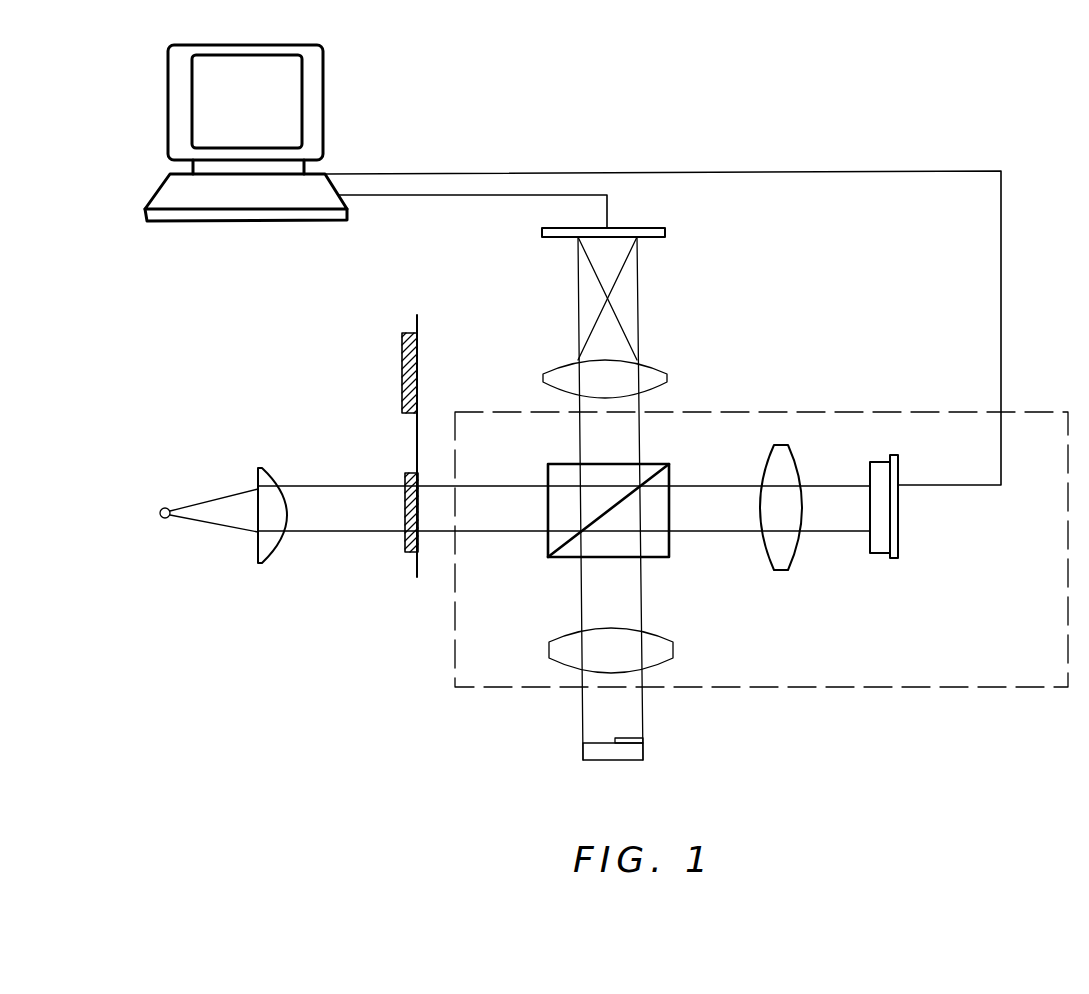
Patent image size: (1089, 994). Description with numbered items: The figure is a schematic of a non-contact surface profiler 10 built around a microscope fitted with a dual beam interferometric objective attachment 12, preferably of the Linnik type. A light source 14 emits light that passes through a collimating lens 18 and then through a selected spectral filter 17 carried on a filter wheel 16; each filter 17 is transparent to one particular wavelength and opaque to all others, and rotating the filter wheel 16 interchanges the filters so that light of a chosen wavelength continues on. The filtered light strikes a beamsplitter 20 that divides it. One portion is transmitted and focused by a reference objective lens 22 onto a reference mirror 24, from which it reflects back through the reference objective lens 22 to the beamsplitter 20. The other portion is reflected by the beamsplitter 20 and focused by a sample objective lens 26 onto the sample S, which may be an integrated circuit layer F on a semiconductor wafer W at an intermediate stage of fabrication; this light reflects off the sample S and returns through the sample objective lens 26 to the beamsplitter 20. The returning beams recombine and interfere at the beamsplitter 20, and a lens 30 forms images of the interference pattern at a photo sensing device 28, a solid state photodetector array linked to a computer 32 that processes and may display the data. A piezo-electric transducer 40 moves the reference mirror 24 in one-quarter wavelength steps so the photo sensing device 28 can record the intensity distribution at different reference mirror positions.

The profiler 10 is at (866, 106).
The dual beam interferometric objective attachment 12 is at (1050, 410).
The light source 14 is at (158, 517).
The filter wheel 16 is at (416, 320).
The spectral filters 17 is at (402, 367).
The collimating lens 18 is at (258, 470).
The beamsplitter 20 is at (546, 548).
The reference objective lens 22 is at (798, 468).
The reference mirror 24 is at (884, 460).
The sample objective lens 26 is at (657, 632).
The photo sensing device 28 is at (648, 228).
The lens 30 is at (652, 370).
The computer 32 is at (327, 57).
The piezo-electric transducer 40 is at (900, 475).
The integrated circuit layer F is at (625, 738).
The semiconductor wafer W is at (630, 752).
The sample S is at (570, 760).